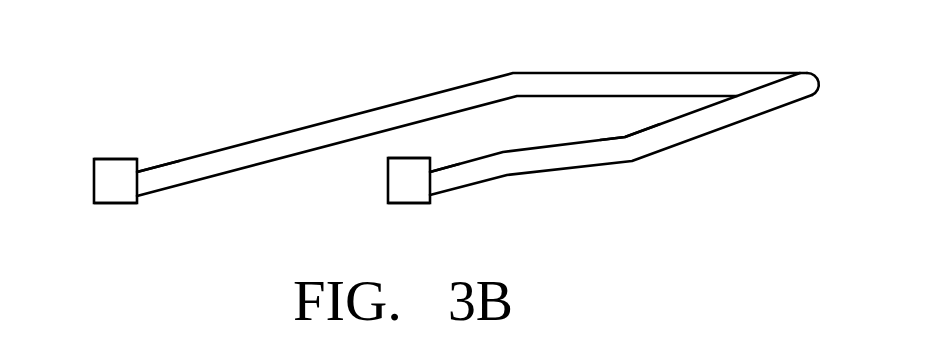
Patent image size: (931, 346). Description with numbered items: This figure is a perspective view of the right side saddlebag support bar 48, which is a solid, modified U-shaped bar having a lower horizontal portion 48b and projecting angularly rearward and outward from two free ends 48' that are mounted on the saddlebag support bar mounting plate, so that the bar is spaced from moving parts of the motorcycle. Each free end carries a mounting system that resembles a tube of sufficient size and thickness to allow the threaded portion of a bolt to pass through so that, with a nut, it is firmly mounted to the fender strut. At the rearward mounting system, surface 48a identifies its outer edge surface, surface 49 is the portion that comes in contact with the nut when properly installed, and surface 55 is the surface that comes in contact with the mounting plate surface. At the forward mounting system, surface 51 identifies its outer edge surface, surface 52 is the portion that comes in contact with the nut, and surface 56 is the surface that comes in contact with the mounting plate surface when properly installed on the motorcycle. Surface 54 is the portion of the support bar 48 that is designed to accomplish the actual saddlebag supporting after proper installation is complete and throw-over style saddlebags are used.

The right side saddlebag support bar 48 is at (474, 108).
The outer edge surface of rearward mounting system 48a is at (413, 193).
The lower horizontal portion 48b is at (688, 82).
The free ends 48' is at (295, 155).
The nut contact surface of rearward mounting system 49 is at (410, 162).
The outer edge surface of forward mounting system 51 is at (120, 183).
The nut contact surface of forward mounting system 52 is at (110, 163).
The saddlebag supporting surface 54 is at (642, 145).
The plate contact surface of rearward mounting system 55 is at (398, 203).
The plate contact surface of forward mounting system 56 is at (112, 203).